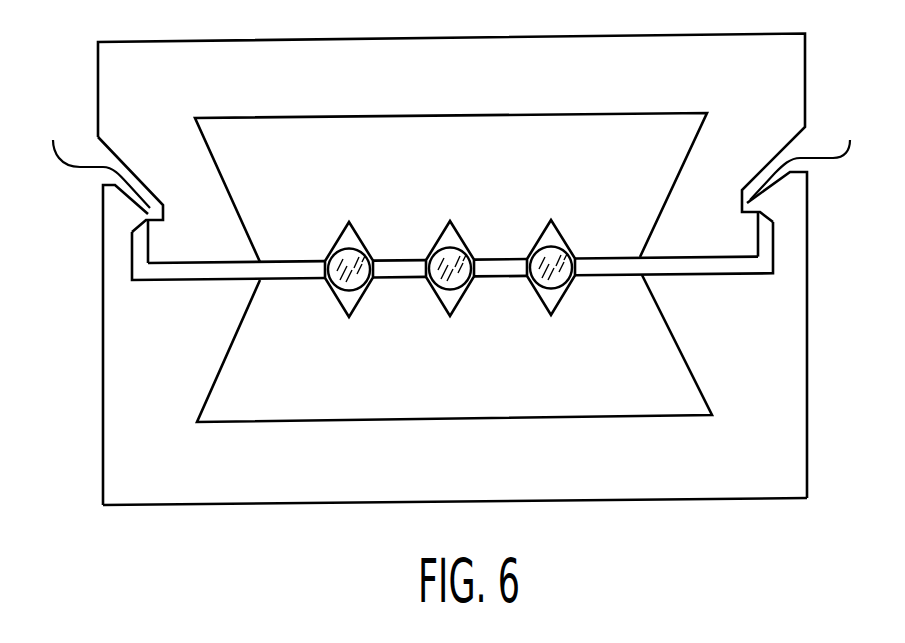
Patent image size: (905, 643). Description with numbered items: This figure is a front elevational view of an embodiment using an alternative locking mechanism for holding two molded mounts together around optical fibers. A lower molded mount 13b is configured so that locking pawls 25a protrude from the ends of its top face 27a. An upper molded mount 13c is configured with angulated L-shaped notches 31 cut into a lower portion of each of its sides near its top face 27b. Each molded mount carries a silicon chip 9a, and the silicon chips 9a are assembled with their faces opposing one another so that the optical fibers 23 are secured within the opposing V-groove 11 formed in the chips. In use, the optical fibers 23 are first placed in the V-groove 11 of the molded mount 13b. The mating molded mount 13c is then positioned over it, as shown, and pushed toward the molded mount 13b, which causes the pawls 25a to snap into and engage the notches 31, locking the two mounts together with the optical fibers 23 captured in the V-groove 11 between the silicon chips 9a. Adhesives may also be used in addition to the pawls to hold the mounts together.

The silicon chip 9a is at (648, 162).
The V-groove 11 is at (364, 251).
The molded mount 13b is at (765, 477).
The molded mount 13c is at (769, 83).
The optical fibers 23 is at (327, 273).
The locking pawls 25a is at (112, 226).
The top face 27a is at (197, 282).
The top face 27b is at (177, 262).
The angulated L-shaped notches 31 is at (453, 160).